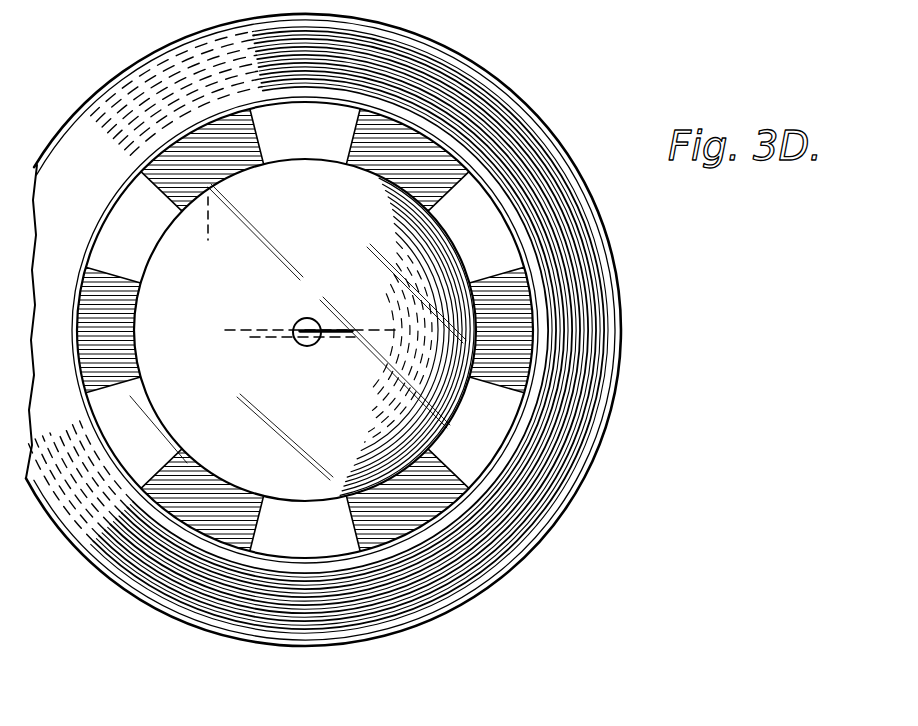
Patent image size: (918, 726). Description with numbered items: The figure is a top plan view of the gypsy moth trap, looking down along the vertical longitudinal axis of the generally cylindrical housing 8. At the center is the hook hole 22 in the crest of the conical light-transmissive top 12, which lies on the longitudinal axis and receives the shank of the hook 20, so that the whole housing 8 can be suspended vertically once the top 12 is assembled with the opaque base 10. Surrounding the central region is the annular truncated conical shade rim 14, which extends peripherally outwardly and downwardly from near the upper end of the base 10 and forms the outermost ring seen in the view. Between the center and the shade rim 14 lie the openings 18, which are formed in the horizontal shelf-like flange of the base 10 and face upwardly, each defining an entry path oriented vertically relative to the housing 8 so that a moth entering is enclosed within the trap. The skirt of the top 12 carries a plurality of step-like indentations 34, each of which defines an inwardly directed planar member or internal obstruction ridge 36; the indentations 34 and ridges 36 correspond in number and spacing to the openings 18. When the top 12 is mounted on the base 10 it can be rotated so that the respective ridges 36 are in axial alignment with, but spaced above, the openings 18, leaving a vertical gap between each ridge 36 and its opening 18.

The housing 8 is at (598, 106).
The base 10 is at (227, 650).
The top 12 is at (130, 216).
The shade rim 14 is at (568, 455).
The openings 18 is at (137, 320).
The hook 20 is at (340, 327).
The hook hole 22 is at (305, 318).
The indentations 34 is at (233, 172).
The internal obstruction ridges 36 is at (168, 146).